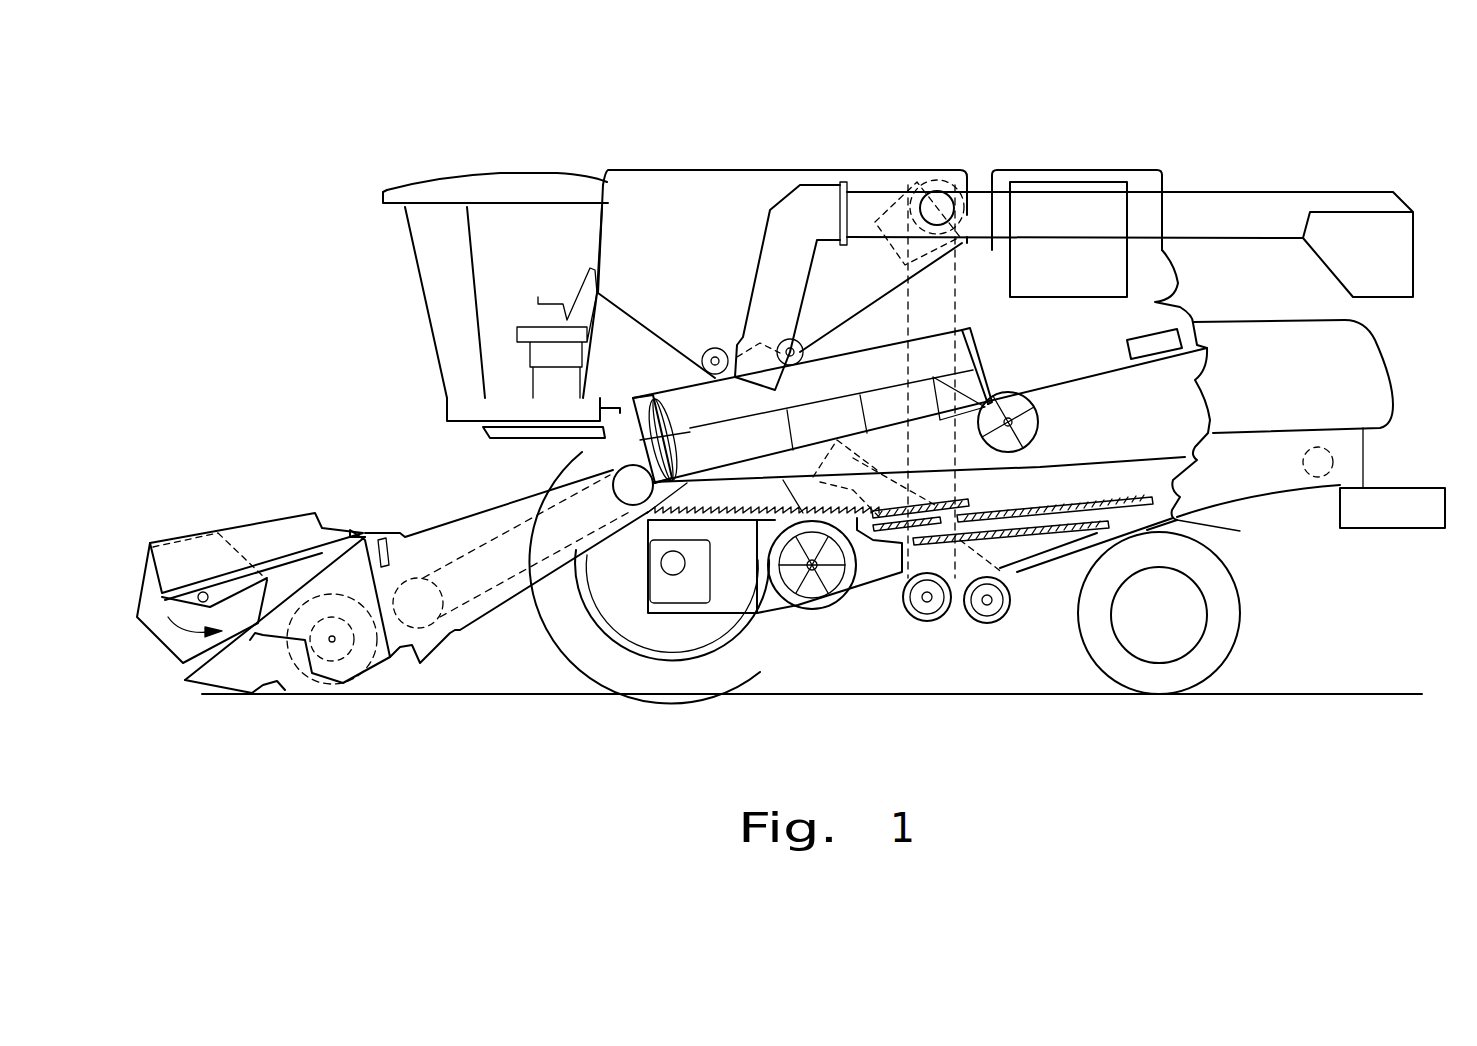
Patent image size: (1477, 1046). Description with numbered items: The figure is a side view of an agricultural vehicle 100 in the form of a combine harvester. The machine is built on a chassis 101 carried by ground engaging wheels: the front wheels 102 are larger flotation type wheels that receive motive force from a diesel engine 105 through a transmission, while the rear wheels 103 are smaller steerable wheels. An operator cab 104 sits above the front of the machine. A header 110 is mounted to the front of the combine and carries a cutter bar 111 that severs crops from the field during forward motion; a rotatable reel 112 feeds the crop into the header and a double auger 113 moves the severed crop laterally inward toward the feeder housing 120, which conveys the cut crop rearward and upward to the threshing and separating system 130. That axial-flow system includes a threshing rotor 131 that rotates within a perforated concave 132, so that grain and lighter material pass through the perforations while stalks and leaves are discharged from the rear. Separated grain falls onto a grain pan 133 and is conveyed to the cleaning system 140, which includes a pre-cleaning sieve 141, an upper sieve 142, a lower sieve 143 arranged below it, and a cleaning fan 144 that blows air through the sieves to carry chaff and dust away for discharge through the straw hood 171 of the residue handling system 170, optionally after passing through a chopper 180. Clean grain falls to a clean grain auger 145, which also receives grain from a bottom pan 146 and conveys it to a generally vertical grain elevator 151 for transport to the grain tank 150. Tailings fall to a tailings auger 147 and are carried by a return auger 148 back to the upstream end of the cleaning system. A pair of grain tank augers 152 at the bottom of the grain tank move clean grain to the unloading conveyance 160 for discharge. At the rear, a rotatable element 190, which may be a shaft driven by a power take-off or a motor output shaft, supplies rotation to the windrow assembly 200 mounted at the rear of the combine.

The agricultural vehicle 100 is at (485, 155).
The chassis 101 is at (1231, 530).
The front wheels 102 is at (577, 647).
The rear wheels 103 is at (1238, 630).
The operator cab 104 is at (417, 278).
The diesel engine 105 is at (1060, 185).
The header 110 is at (237, 500).
The cutter bar 111 is at (257, 692).
The rotatable reel 112 is at (143, 582).
The double auger 113 is at (333, 684).
The feeder housing 120 is at (460, 517).
The threshing and separating system 130 is at (566, 449).
The threshing rotor 131 is at (657, 407).
The perforated concave 132 is at (843, 380).
The grain pan 133 is at (650, 525).
The cleaning system 140 is at (872, 600).
The pre-cleaning sieve 141 is at (970, 502).
The upper sieve 142 is at (1067, 502).
The lower sieve 143 is at (1033, 535).
The cleaning fan 144 is at (820, 592).
The clean grain auger 145 is at (938, 603).
The bottom pan 146 is at (1083, 550).
The tailings auger 147 is at (985, 617).
The return auger 148 is at (888, 487).
The grain tank 150 is at (667, 176).
The grain elevator 151 is at (985, 310).
The grain tank augers 152 is at (713, 346).
The unloading conveyance 160 is at (1258, 200).
The residue handling system 170 is at (1345, 556).
The straw hood 171 is at (1373, 363).
The chopper 180 is at (1125, 357).
The rotatable element 190 is at (1302, 465).
The windrow assembly 200 is at (1420, 472).